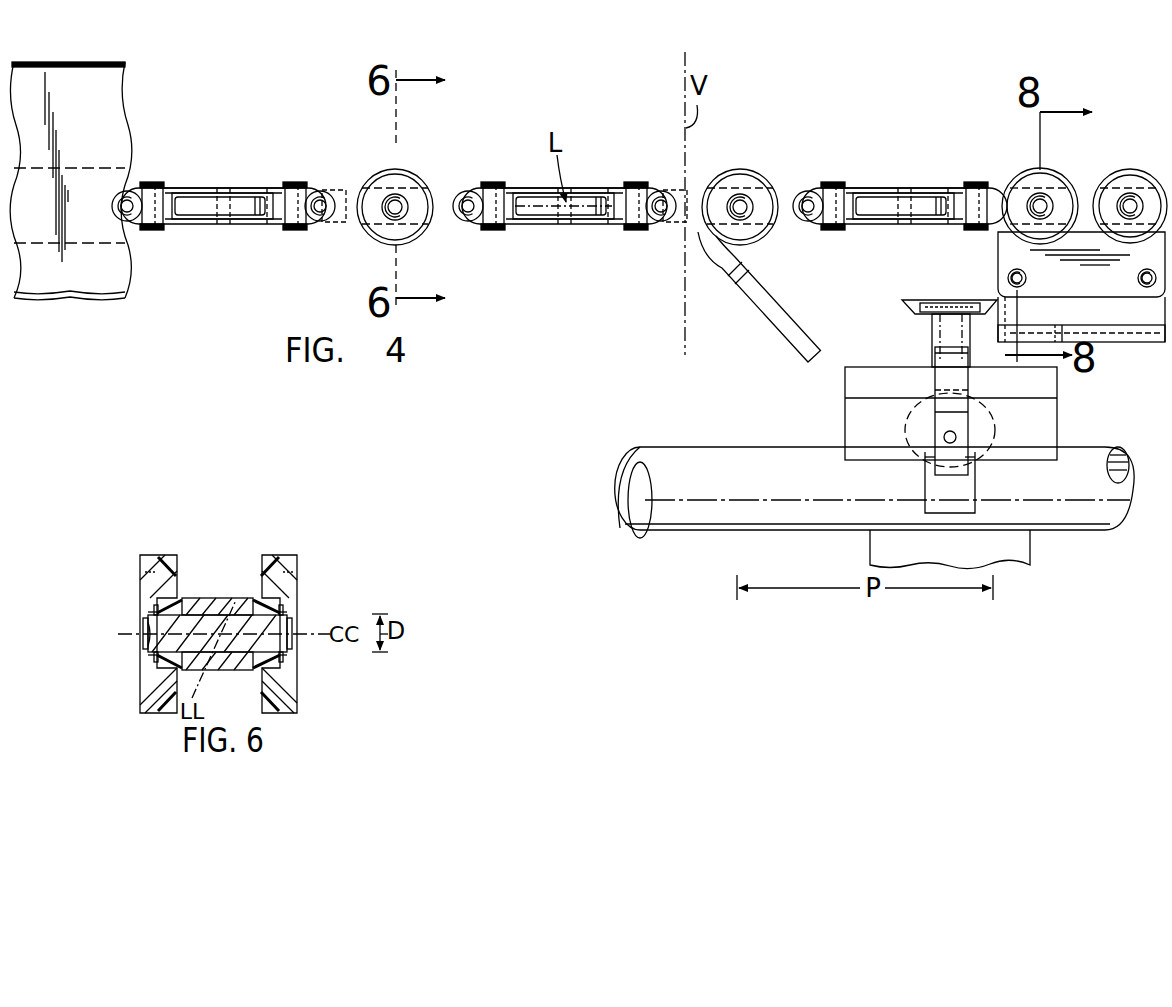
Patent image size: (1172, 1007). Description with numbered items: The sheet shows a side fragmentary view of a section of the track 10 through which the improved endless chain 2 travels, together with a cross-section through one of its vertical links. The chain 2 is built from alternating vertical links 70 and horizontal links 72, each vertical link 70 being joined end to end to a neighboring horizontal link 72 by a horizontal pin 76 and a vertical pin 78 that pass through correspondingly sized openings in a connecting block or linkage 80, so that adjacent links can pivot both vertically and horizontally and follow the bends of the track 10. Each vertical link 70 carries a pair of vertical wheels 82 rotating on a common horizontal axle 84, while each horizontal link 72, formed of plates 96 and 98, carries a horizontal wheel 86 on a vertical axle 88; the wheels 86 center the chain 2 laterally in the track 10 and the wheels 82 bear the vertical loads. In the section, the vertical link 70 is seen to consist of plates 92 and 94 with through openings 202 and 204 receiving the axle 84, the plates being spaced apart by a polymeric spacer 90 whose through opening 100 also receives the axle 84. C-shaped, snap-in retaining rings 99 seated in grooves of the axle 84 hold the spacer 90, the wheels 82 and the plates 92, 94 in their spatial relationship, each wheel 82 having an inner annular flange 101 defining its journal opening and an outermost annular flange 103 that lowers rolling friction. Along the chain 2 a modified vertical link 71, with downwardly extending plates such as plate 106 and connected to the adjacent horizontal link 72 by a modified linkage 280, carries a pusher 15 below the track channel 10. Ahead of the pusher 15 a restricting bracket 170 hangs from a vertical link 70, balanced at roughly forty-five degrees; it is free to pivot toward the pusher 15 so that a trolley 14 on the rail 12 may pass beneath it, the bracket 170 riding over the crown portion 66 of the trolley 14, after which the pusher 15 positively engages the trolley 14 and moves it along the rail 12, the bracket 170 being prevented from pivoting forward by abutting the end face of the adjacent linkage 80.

In FIG. 4, the chain 2 is at (440, 160).
In FIG. 4, the track 10 is at (128, 270).
In FIG. 4, the rail 12 is at (714, 446).
In FIG. 4, the trolley 14 is at (845, 410).
In FIG. 4, the pusher 15 is at (1110, 333).
In FIG. 4, the crown portion 66 is at (932, 299).
In FIG. 4, the vertical link 70 is at (338, 185).
In FIG. 6, the vertical link 70 is at (203, 521).
In FIG. 4, the modified vertical link 71 is at (1070, 171).
In FIG. 4, the horizontal link 72 is at (190, 188).
In FIG. 4, the horizontal pin 76 is at (328, 218).
In FIG. 4, the vertical pin 78 is at (152, 181).
In FIG. 4, the connecting block 80 is at (160, 222).
In FIG. 4, the vertical wheel 82 is at (418, 233).
In FIG. 6, the vertical wheel 82 is at (165, 556).
In FIG. 4, the axle 84 is at (392, 218).
In FIG. 6, the axle 84 is at (262, 619).
In FIG. 4, the horizontal wheel 86 is at (240, 212).
In FIG. 4, the axle 88 is at (215, 229).
In FIG. 6, the spacer 90 is at (228, 597).
In FIG. 6, the plate 92 is at (185, 597).
In FIG. 4, the plate 94 is at (358, 190).
In FIG. 6, the plate 94 is at (252, 597).
In FIG. 4, the plate 96 is at (232, 187).
In FIG. 4, the plate 98 is at (200, 213).
In FIG. 4, the retaining ring 99 is at (396, 195).
In FIG. 6, the retaining ring 99 is at (155, 605).
In FIG. 6, the through opening 100 is at (220, 652).
In FIG. 6, the annular flange 101 is at (152, 612).
In FIG. 6, the outermost annular circumferential flange 103 is at (142, 566).
In FIG. 4, the plate 106 is at (1000, 265).
In FIG. 4, the restricting bracket 170 is at (796, 322).
In FIG. 6, the through opening 202 is at (286, 664).
In FIG. 6, the through opening 204 is at (150, 640).
In FIG. 4, the linkage 280 is at (975, 222).